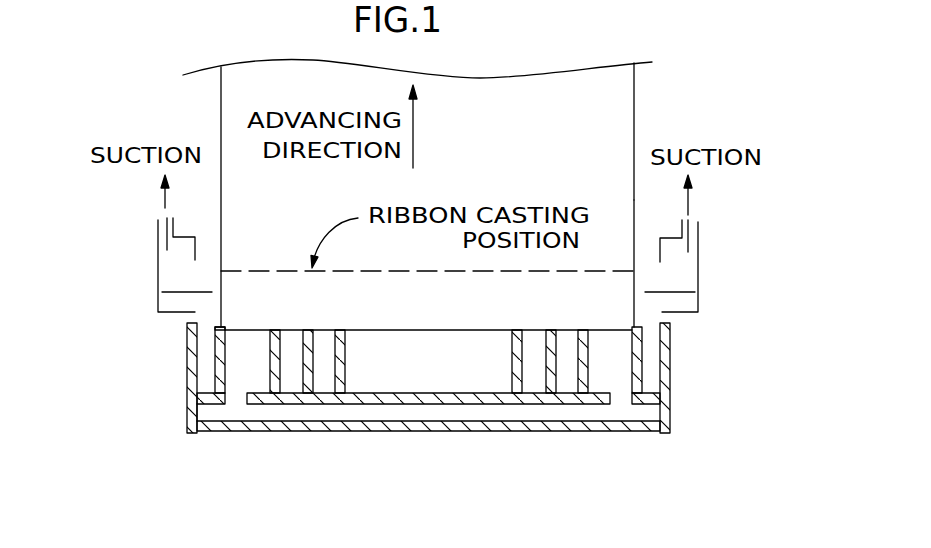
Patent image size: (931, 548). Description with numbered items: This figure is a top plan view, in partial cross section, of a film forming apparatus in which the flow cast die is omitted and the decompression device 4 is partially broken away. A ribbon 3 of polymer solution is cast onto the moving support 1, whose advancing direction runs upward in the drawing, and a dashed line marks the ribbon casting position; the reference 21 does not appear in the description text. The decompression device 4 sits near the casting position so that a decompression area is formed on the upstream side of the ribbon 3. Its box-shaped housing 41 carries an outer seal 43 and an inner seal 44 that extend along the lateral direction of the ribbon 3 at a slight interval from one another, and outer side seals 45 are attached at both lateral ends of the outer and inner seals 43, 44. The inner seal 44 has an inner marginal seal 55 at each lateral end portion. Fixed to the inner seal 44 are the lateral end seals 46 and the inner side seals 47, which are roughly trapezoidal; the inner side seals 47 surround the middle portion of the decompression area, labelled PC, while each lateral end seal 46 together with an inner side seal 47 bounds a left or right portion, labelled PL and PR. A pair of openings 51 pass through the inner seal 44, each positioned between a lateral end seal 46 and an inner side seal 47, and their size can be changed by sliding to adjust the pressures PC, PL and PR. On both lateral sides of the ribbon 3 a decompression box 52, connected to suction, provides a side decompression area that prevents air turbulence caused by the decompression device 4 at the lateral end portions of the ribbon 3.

The support 1 is at (612, 98).
The ribbon 3 is at (610, 303).
The decompression device 4 is at (417, 420).
The die lip edge 21 is at (220, 325).
The housing 41 is at (525, 440).
The outer seal 43 is at (212, 432).
The inner seal 44 is at (305, 395).
The outer side seal 45 is at (188, 385).
The lateral end seal 46 is at (217, 346).
The inner side seal 47 is at (262, 393).
The opening 51 is at (236, 400).
The decompression box 52 is at (158, 265).
The inner marginal seal 55 is at (213, 400).